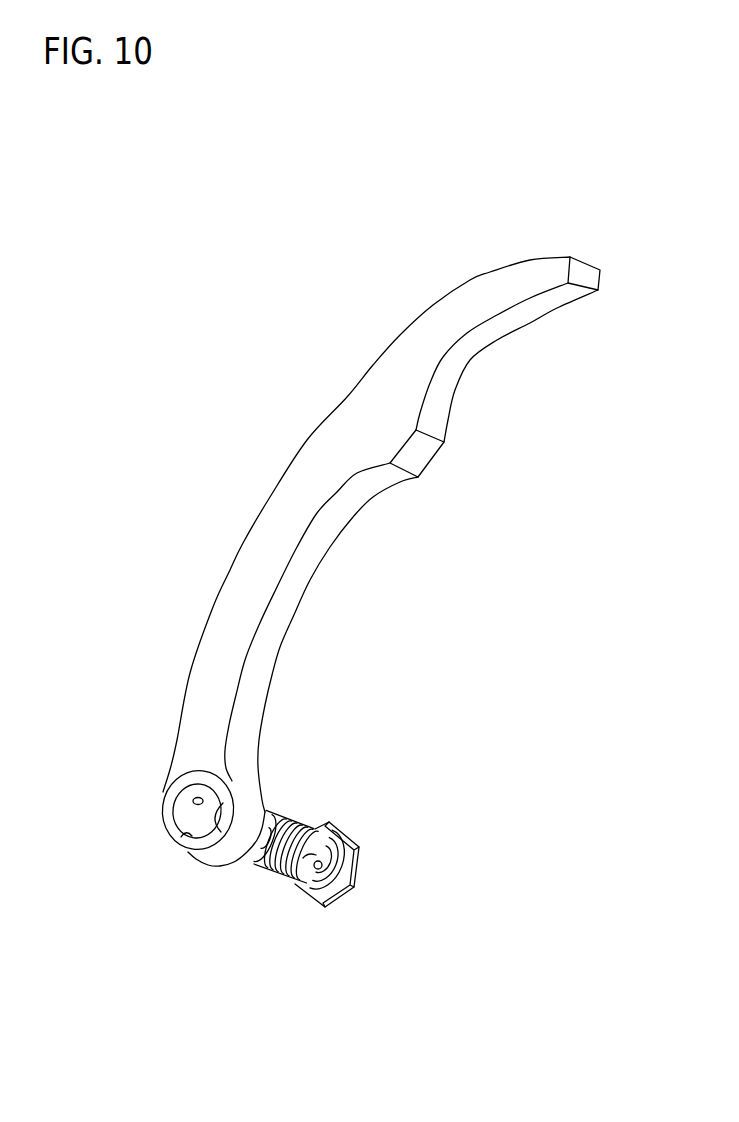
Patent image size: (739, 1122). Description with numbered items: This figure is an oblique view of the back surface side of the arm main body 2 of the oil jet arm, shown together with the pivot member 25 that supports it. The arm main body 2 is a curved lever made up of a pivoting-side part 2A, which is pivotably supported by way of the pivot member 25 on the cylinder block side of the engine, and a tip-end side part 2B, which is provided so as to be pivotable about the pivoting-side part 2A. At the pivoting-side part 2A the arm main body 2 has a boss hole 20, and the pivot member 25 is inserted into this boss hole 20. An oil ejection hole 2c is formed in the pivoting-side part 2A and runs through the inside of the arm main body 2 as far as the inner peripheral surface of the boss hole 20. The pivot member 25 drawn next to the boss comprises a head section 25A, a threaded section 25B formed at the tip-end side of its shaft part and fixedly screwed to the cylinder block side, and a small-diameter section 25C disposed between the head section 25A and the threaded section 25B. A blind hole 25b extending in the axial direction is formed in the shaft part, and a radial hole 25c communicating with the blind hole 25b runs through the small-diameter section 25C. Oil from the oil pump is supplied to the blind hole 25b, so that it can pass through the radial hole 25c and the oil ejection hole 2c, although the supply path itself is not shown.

The arm main body 2 is at (245, 437).
The pivoting-side part 2A is at (198, 685).
The tip-end side part 2B is at (488, 285).
The oil ejection hole 2c is at (193, 802).
The boss hole 20 is at (183, 834).
The pivot member 25 is at (326, 861).
The head section 25A is at (345, 833).
The threaded section 25B is at (293, 827).
The small-diameter section 25C is at (316, 875).
The blind hole 25b is at (258, 858).
The radial hole 25c is at (327, 904).